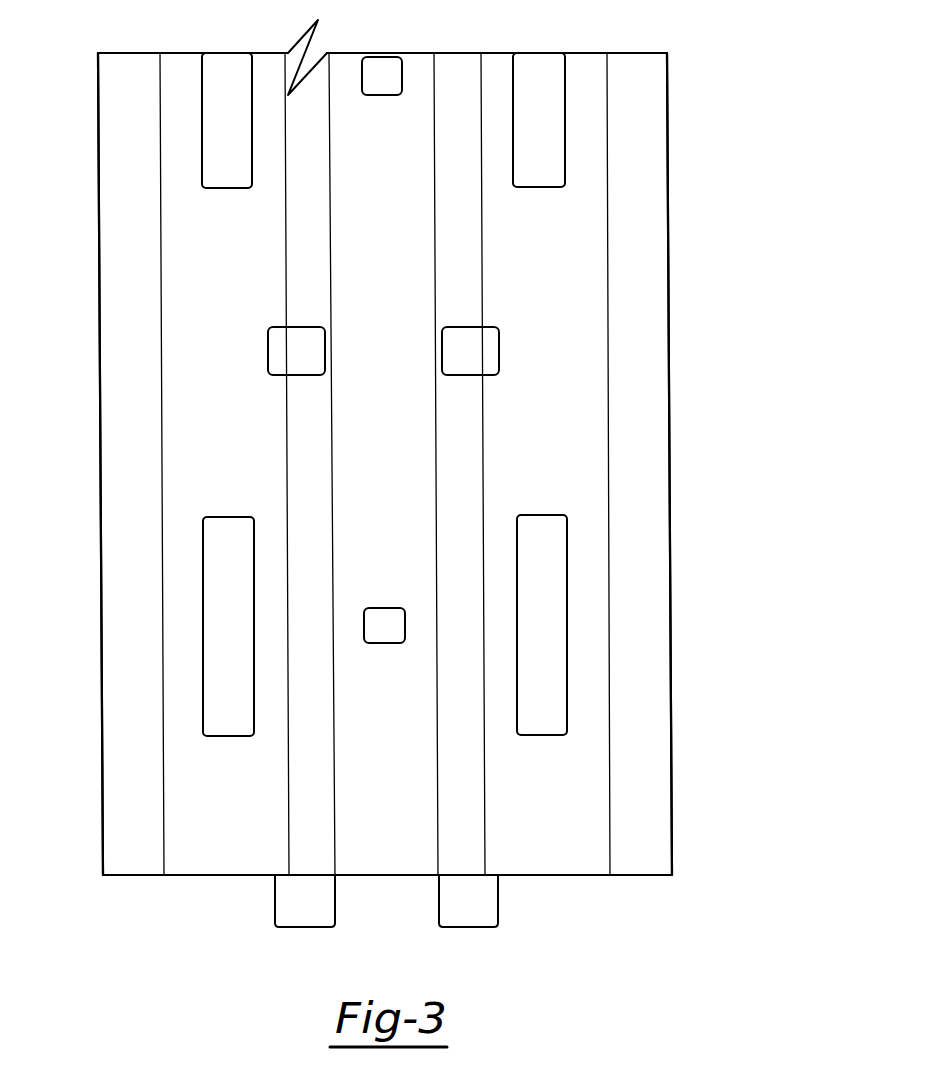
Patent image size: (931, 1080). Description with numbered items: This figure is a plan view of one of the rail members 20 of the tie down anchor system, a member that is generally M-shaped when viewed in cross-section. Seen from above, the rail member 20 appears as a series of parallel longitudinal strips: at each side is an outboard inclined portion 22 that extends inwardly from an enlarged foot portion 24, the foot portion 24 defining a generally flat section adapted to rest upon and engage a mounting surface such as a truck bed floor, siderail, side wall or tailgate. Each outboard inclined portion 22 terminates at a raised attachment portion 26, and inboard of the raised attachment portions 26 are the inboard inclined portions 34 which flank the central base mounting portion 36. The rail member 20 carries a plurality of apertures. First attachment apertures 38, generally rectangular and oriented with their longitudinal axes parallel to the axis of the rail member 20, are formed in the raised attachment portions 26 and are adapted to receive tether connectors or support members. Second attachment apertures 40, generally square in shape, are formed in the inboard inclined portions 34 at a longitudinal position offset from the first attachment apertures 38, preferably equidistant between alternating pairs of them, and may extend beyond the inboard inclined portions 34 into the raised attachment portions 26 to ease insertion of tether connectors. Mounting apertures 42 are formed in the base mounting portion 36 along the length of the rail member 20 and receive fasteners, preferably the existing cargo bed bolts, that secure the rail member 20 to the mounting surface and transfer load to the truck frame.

The rail member 20 is at (669, 463).
The outboard inclined portion 22 is at (150, 853).
The foot portion 24 is at (102, 817).
The raised attachment portion 26 is at (240, 853).
The inboard inclined portion 34 is at (330, 853).
The base mounting portion 36 is at (402, 853).
The first attachment aperture 38 is at (227, 188).
The second attachment aperture 40 is at (268, 351).
The mounting aperture 42 is at (382, 95).